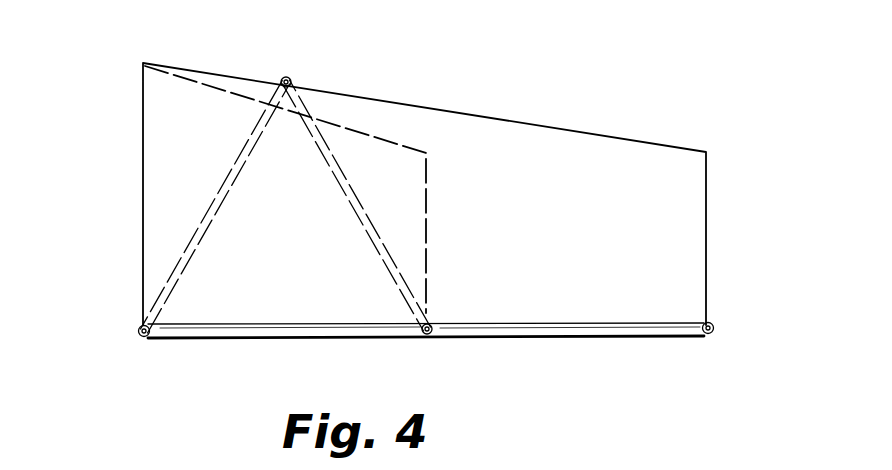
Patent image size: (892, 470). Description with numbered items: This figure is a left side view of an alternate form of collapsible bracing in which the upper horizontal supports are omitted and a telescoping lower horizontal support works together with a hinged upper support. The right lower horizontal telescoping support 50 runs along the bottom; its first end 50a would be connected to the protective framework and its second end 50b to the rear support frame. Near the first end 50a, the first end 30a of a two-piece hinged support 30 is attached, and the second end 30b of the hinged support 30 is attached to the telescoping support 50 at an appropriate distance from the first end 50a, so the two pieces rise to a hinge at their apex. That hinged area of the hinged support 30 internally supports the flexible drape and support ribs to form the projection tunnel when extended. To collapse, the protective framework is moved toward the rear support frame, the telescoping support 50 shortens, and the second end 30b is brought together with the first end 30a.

The two-piece hinged support 30 is at (262, 117).
The first end of hinged support 30a is at (172, 296).
The second end of hinged support 30b is at (410, 302).
The right lower horizontal telescoping support 50 is at (615, 331).
The first end of telescoping support 50a is at (141, 339).
The second end of telescoping support 50b is at (708, 338).